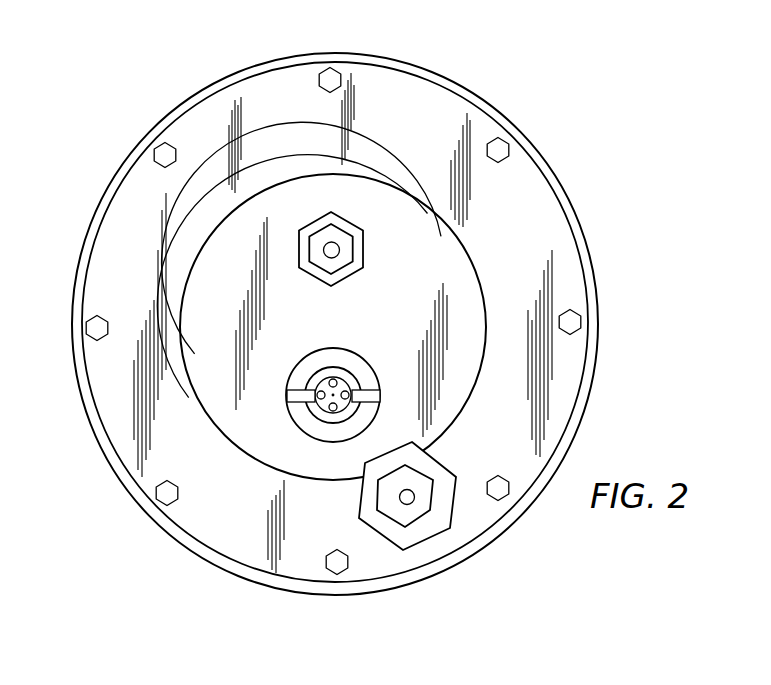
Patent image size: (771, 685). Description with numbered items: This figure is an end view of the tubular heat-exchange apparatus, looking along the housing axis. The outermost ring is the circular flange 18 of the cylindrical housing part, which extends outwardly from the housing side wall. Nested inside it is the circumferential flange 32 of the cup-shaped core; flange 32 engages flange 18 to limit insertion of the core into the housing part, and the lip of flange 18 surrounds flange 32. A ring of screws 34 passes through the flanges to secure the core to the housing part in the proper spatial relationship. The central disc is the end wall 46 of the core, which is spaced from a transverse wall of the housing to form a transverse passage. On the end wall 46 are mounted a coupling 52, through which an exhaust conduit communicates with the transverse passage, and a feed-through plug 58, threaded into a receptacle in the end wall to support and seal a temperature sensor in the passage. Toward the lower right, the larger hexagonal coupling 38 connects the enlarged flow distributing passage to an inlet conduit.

The circular flange 18 is at (148, 130).
The circumferential flange 32 is at (123, 207).
The screws 34 is at (93, 328).
The end wall 46 is at (386, 324).
The coupling 52 is at (357, 257).
The feed-through plug 58 is at (312, 360).
The coupling 38 is at (420, 530).